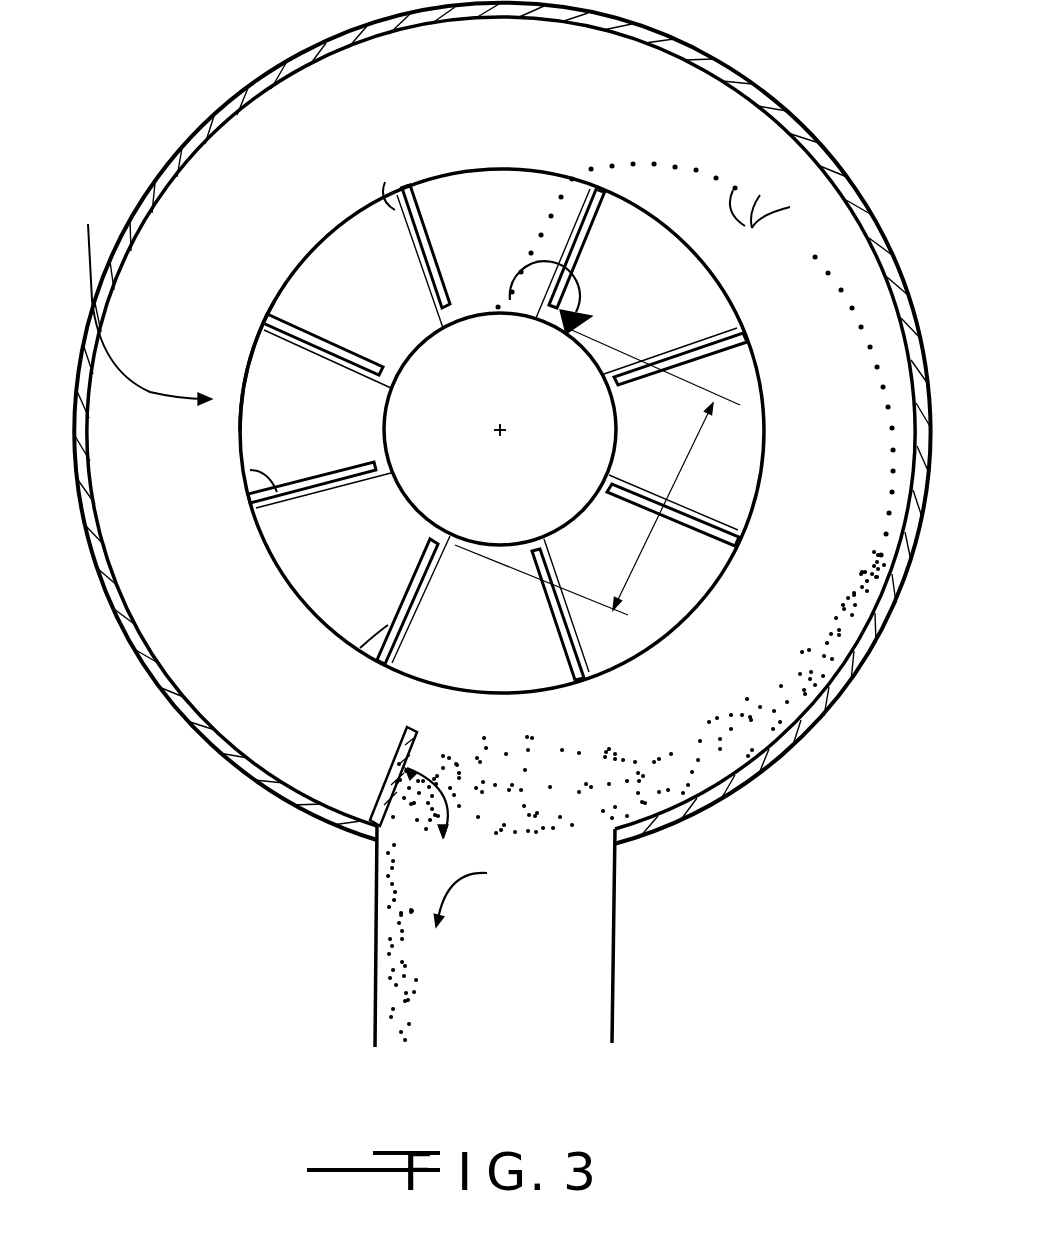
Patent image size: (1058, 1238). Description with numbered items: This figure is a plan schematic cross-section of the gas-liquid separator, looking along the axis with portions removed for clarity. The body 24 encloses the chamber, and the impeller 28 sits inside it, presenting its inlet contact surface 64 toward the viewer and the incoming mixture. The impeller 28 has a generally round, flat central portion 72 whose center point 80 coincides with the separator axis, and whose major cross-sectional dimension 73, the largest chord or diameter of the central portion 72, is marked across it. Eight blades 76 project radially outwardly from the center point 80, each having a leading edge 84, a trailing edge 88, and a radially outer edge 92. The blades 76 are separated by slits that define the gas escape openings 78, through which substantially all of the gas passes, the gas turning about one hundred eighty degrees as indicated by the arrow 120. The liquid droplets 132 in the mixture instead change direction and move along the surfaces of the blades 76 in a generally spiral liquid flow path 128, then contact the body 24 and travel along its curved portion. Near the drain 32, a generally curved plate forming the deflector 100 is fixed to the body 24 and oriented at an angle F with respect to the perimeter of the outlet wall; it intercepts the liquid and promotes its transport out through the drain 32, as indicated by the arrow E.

The body 24 is at (196, 120).
The impeller 28 is at (137, 292).
The drain 32 is at (375, 937).
The inlet contact surface 64 is at (420, 414).
The central portion 72 is at (521, 497).
The major cross-sectional dimension 73 is at (652, 534).
The blades 76 is at (740, 297).
The gas escape openings 78 is at (395, 213).
The center point 80 is at (505, 425).
The leading edge 84 is at (395, 195).
The trailing edge 88 is at (310, 275).
The radially outer edge 92 is at (250, 361).
The deflector 100 is at (418, 748).
The arrow 120 is at (580, 300).
The liquid flow path 128 is at (728, 165).
The liquid droplets 132 is at (800, 238).
The arrow E is at (487, 873).
The angle F is at (445, 790).